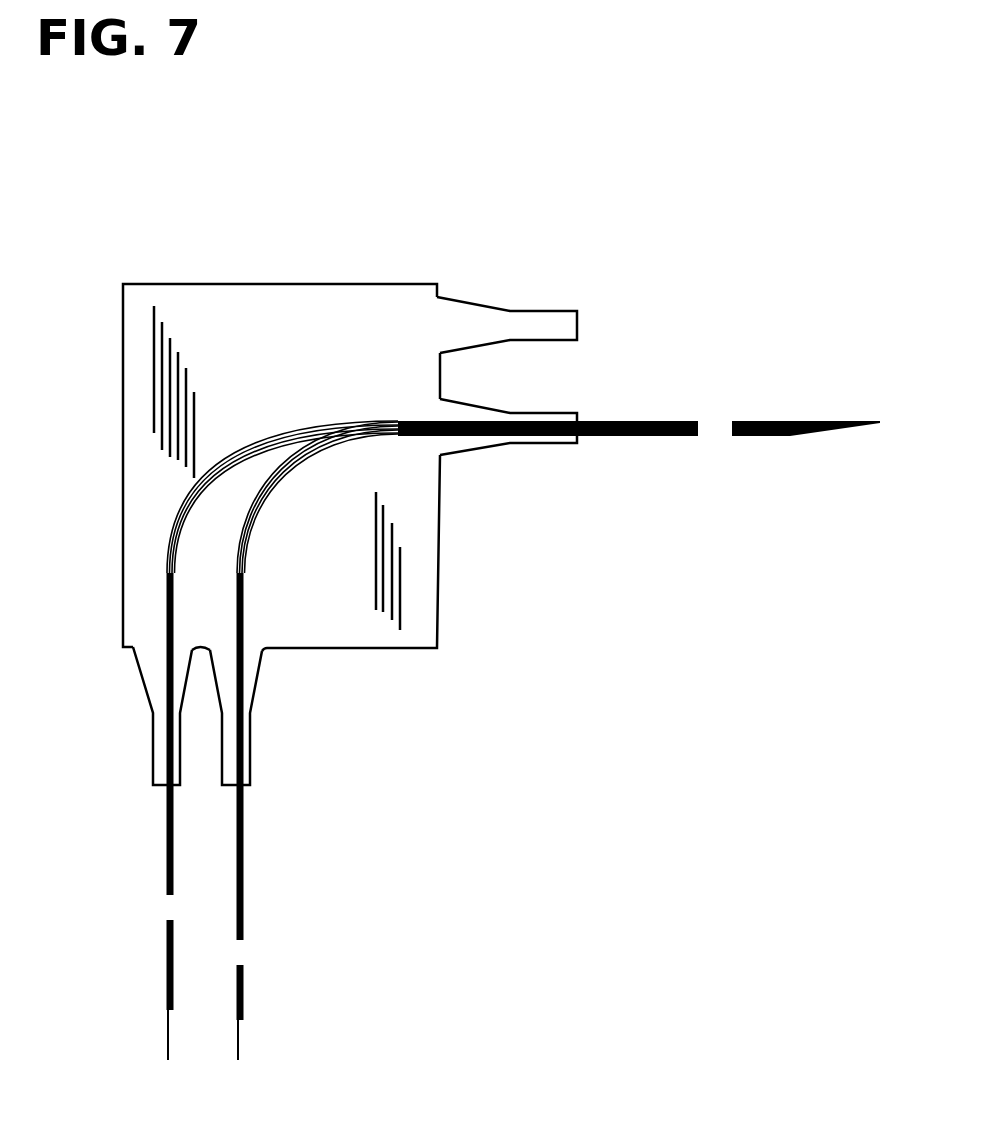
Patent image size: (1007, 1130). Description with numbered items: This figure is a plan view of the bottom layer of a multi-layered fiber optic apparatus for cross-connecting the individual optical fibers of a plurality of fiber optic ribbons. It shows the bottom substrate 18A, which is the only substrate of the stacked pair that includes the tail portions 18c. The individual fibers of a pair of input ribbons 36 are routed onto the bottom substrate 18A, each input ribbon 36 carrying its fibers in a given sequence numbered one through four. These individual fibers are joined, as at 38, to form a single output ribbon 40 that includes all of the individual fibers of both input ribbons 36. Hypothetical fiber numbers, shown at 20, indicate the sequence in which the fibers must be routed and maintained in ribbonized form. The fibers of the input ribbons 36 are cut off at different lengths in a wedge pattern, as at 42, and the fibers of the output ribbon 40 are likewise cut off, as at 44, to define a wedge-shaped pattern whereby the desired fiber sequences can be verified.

The bottom substrate 18A is at (425, 550).
The tail portions 18c is at (540, 310).
The joined fibers 38 is at (352, 437).
The output ribbon 40 is at (613, 420).
The numerical sequence 20 is at (713, 470).
The cut-off fibers of output ribbon 44 is at (837, 425).
The input ribbons 36 is at (165, 857).
The cut-off fibers of input ribbons 42 is at (173, 1018).